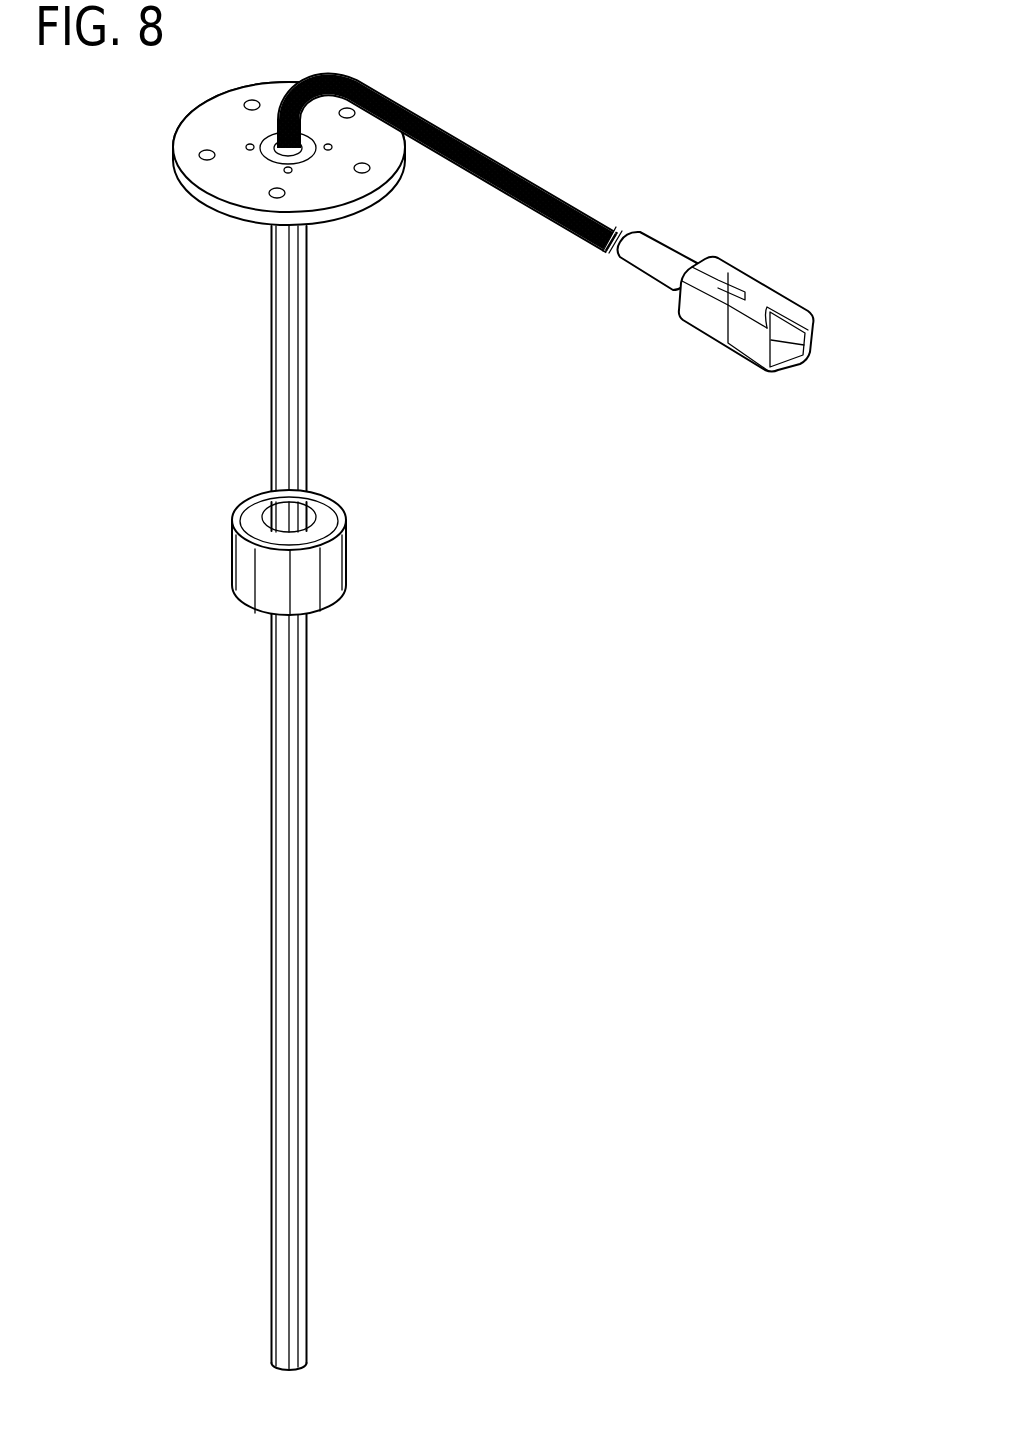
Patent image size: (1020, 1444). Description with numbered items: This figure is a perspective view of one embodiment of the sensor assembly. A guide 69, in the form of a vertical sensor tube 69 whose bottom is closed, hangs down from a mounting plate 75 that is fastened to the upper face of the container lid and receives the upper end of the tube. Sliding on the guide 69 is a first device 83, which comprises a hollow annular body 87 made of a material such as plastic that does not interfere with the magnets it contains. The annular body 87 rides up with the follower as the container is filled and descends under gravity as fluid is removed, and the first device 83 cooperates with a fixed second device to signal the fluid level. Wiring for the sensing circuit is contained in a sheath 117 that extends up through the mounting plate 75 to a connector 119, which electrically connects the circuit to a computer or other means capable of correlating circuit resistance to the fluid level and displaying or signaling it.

The guide 69 is at (272, 343).
The mounting plate 75 is at (180, 124).
The first device 83 is at (358, 490).
The annular body 87 is at (347, 560).
The sheath 117 is at (438, 122).
The connector 119 is at (763, 280).